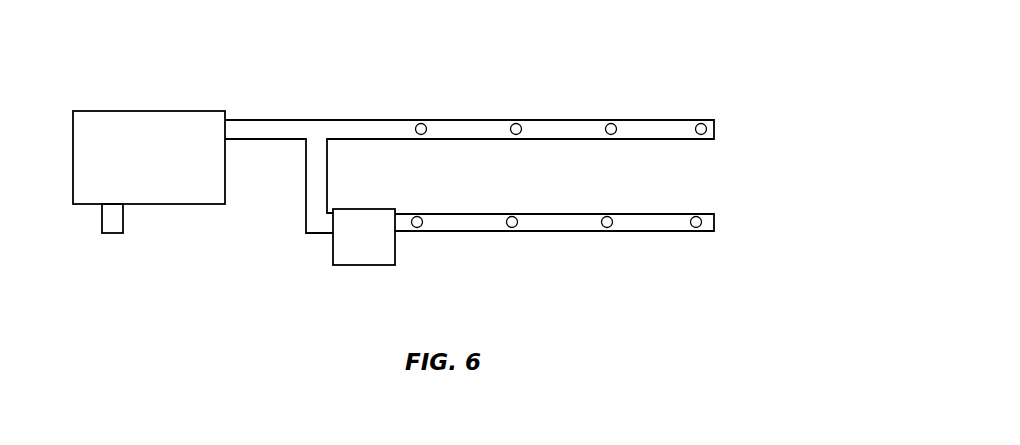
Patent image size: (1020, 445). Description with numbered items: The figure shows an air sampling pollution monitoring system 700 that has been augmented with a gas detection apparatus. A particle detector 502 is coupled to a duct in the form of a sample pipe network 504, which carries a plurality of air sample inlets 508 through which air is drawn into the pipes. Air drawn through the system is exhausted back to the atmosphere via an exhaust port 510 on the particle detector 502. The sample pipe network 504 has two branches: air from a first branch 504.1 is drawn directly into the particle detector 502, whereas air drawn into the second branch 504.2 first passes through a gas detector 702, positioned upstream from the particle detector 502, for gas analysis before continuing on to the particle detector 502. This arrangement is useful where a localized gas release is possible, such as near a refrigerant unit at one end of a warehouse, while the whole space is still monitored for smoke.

The particle detector 502 is at (163, 111).
The exhaust port 510 is at (123, 230).
The sample pipe network 504 is at (522, 150).
The first branch 504.1 is at (714, 131).
The second branch 504.2 is at (714, 218).
The air sample inlets 508 is at (420, 136).
The gas detector 702 is at (333, 242).
The air sampling pollution monitoring system 700 is at (552, 90).